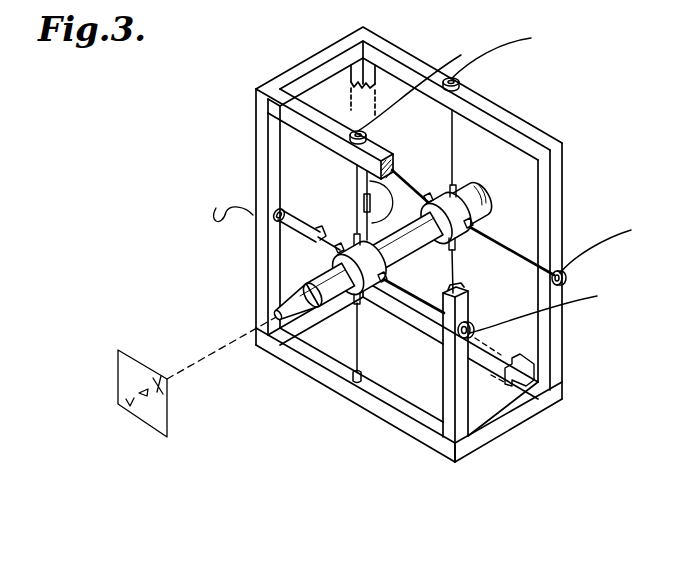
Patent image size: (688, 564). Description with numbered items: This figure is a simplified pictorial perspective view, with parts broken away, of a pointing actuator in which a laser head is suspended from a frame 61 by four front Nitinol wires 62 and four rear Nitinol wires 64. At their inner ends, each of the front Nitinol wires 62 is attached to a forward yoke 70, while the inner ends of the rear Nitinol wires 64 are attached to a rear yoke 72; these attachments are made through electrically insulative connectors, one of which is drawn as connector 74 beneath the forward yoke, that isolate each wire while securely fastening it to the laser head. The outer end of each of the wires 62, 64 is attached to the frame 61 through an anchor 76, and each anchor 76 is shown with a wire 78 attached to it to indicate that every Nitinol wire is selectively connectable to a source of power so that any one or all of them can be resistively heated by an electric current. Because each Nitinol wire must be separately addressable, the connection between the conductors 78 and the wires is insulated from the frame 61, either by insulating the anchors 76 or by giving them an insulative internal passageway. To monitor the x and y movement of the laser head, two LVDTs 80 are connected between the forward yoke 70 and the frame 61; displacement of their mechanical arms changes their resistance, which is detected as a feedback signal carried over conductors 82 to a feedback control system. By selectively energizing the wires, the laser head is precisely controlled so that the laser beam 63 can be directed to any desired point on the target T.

The frame 61 is at (526, 428).
The front Nitinol wires 62 is at (356, 176).
The laser beam 63 is at (207, 353).
The rear Nitinol wires 64 is at (455, 149).
The forward yoke 70 is at (388, 266).
The rear yoke 72 is at (472, 225).
The lower stud 74 is at (364, 297).
The anchor 76 is at (358, 131).
The wire 78 is at (463, 54).
The LVDTs 80 is at (232, 263).
The conductors 82 is at (254, 142).
The target T is at (124, 367).